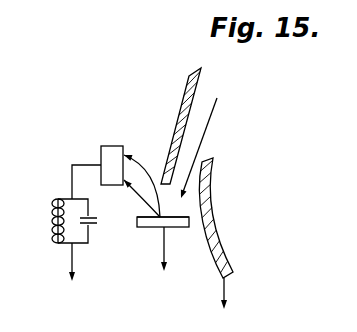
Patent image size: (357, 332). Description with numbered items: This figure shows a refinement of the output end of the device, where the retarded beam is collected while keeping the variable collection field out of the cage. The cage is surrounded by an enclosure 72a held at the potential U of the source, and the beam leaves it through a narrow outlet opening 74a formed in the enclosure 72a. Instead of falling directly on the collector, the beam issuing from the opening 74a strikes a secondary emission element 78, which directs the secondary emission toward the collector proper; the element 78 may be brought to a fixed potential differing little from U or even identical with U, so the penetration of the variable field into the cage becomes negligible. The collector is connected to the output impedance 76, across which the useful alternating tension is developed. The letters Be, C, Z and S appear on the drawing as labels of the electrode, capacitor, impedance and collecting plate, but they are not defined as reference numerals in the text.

The enclosure 72a is at (181, 98).
The outlet opening 74a is at (192, 172).
The output impedance 76 is at (73, 232).
The secondary emission element 78 is at (153, 228).
The electrode Be is at (181, 116).
The capacitor C is at (112, 156).
The impedance Z is at (68, 236).
The collector plate S is at (155, 231).